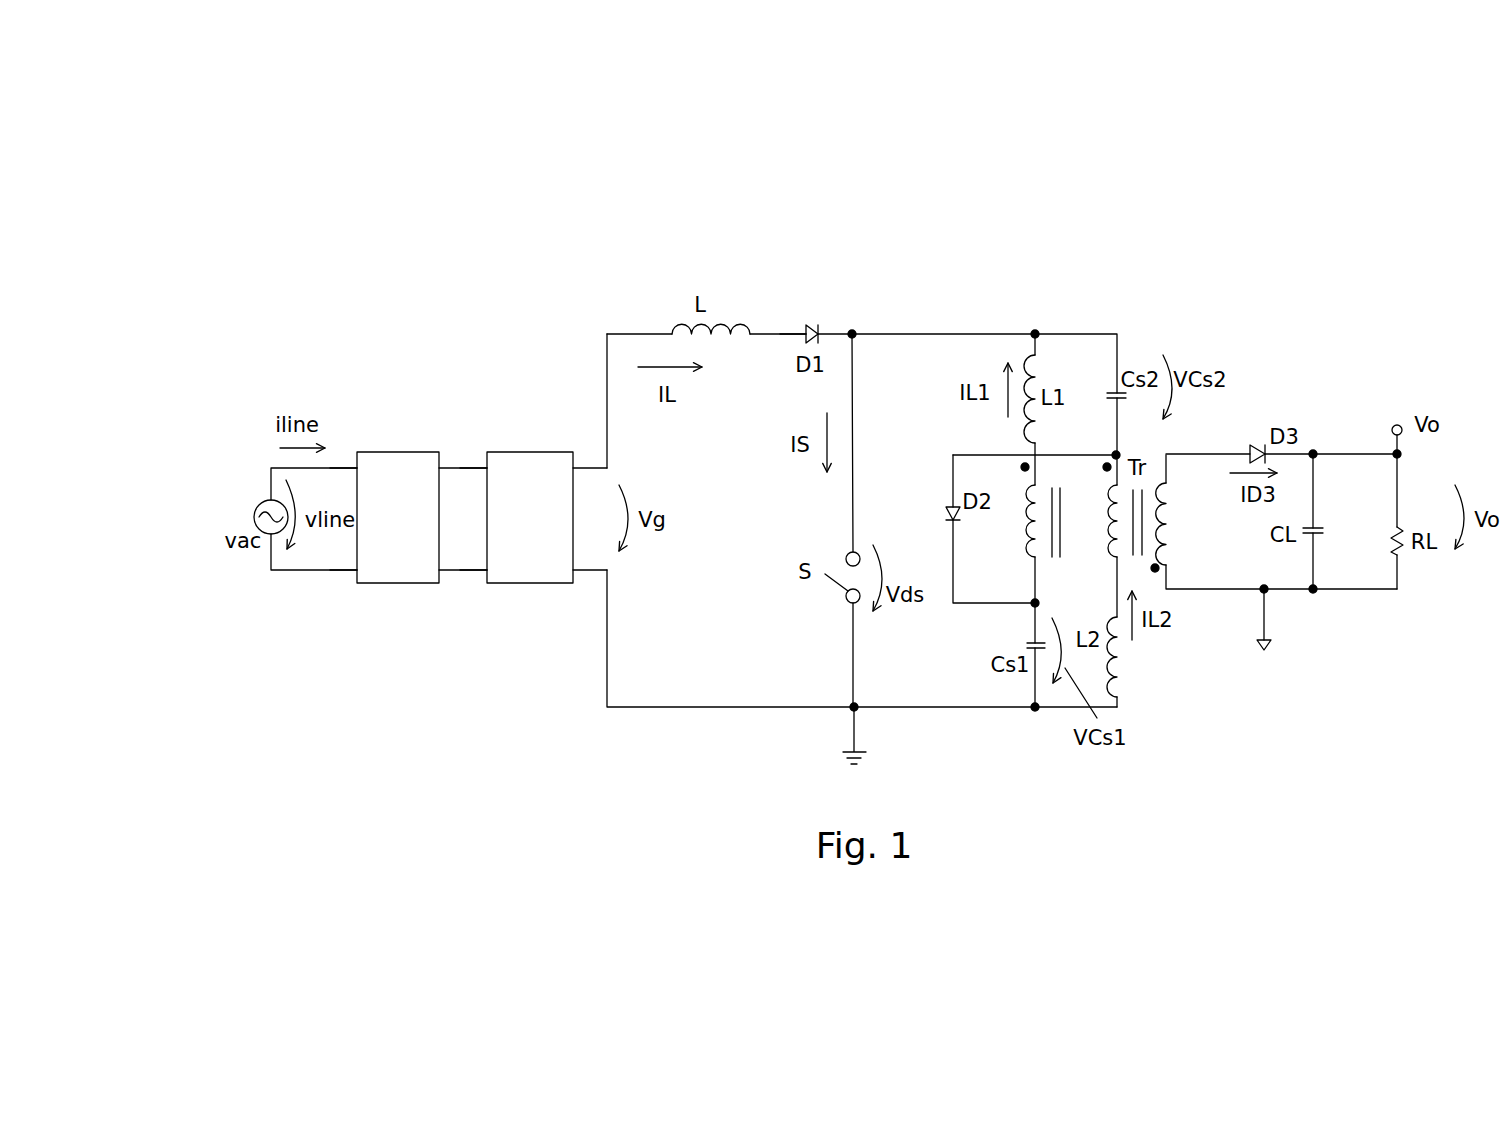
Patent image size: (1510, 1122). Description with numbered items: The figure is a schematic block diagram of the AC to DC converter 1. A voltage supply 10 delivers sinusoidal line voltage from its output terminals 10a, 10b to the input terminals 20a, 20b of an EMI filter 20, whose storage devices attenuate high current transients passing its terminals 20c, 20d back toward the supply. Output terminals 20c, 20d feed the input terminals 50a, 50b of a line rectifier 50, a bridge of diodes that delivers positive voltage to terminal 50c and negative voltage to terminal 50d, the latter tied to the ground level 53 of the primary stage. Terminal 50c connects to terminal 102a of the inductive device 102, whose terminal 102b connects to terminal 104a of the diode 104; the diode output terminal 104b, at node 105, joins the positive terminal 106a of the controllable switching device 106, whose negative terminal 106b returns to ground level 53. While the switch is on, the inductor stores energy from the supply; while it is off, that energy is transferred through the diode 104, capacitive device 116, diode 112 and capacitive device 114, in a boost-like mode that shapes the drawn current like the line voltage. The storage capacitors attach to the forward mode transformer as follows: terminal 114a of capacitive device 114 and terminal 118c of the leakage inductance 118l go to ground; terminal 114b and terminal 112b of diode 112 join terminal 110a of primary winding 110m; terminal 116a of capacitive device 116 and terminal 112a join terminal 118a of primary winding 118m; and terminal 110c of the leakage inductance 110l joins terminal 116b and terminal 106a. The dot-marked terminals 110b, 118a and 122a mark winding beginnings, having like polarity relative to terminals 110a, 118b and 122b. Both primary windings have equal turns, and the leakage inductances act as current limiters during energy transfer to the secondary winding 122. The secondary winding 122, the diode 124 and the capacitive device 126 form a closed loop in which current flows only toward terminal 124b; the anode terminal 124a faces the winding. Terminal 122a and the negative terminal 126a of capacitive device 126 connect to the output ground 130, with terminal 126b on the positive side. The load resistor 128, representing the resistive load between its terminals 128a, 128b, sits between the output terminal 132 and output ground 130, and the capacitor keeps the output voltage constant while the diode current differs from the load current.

The AC to DC converter 1 is at (456, 250).
The voltage supply VAC 10 is at (254, 517).
The output terminal of voltage supply 10a is at (268, 488).
The output terminal of voltage supply 10b is at (270, 553).
The EMI filter 20 is at (393, 450).
The input terminal of EMI filter 20a is at (340, 466).
The input terminal of EMI filter 20b is at (335, 570).
The output terminal of EMI filter 20c is at (444, 465).
The output terminal of EMI filter 20d is at (448, 570).
The line rectifier 50 is at (522, 450).
The input terminal of line rectifier 50a is at (472, 466).
The input terminal of line rectifier 50b is at (473, 570).
The positive output terminal of line rectifier 50c is at (585, 465).
The negative output terminal of line rectifier 50d is at (583, 570).
The ground level 53 is at (853, 737).
The inductive device L 102 is at (680, 328).
The terminal of inductive device L 102a is at (637, 334).
The terminal of inductive device L 102b is at (750, 328).
The unidirectional conducting device D1 104 is at (814, 326).
The terminal of D1 104a is at (790, 334).
The output terminal of D1 104b is at (840, 334).
The node 105 is at (940, 334).
The controllable switching device S 106 is at (837, 585).
The positive terminal of switching device 106a is at (850, 532).
The negative terminal of switching device 106b is at (853, 661).
The terminal of primary winding 110m 110a is at (1035, 570).
The dot-marked terminal of primary winding 110b is at (1035, 443).
The terminal of leakage inductance L1 110c is at (1033, 332).
The leakage inductance L1 110l is at (1028, 360).
The primary winding 110m is at (1028, 517).
The unidirectional conducting device D2 112 is at (940, 510).
The terminal of D2 112a is at (952, 478).
The terminal of D2 112b is at (953, 537).
The capacitive device CS1 114 is at (1025, 643).
The terminal of CS1 114a is at (1035, 687).
The terminal of CS1 114b is at (1035, 630).
The capacitive device CS2 116 is at (1107, 393).
The terminal of CS2 116a is at (1113, 436).
The terminal of CS2 116b is at (1118, 340).
The terminal of primary winding 118m 118a is at (1112, 483).
The terminal of primary winding 118b is at (1116, 597).
The terminal of leakage inductance L2 118c is at (1118, 702).
The leakage inductance L2 118l is at (1112, 665).
The primary winding 118m is at (1107, 528).
The secondary winding 122 is at (1168, 517).
The terminal of secondary winding 122a is at (1167, 563).
The terminal of secondary winding 122b is at (1167, 468).
The unidirectional conducting device D3 124 is at (1257, 445).
The anode of diode D3 124a is at (1207, 455).
The terminal of D3 124b is at (1303, 447).
The capacitive device CL 126 is at (1323, 530).
The negative terminal of CL 126a is at (1318, 568).
The second terminal of capacitor CL 126b is at (1318, 489).
The load resistor RL 128 is at (1403, 522).
The first terminal of load 128a is at (1400, 490).
The second terminal of load 128b is at (1400, 580).
The output ground 130 is at (1270, 620).
The output terminal VO 132 is at (1388, 442).